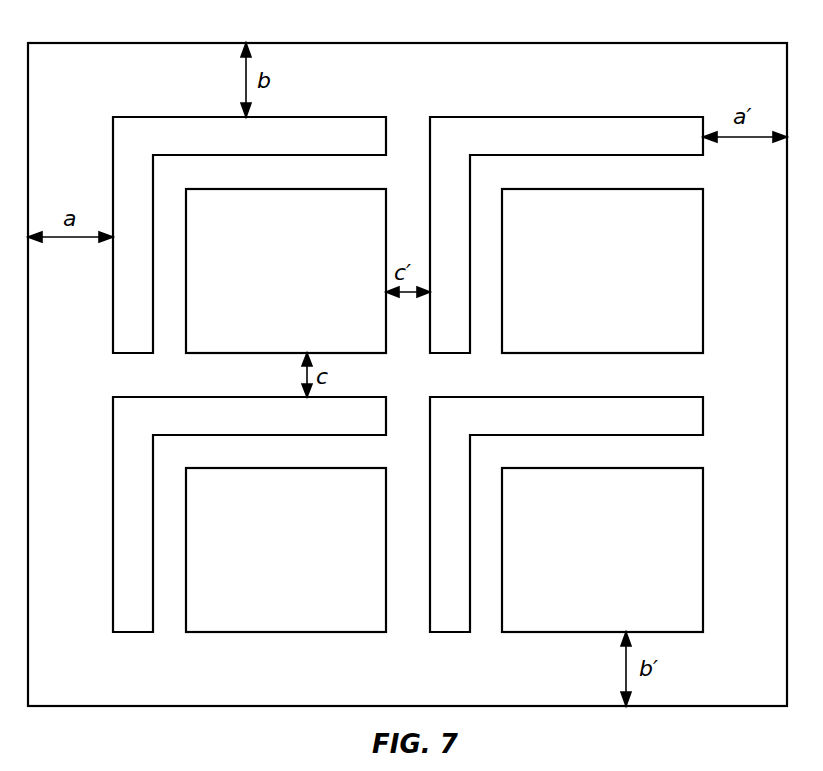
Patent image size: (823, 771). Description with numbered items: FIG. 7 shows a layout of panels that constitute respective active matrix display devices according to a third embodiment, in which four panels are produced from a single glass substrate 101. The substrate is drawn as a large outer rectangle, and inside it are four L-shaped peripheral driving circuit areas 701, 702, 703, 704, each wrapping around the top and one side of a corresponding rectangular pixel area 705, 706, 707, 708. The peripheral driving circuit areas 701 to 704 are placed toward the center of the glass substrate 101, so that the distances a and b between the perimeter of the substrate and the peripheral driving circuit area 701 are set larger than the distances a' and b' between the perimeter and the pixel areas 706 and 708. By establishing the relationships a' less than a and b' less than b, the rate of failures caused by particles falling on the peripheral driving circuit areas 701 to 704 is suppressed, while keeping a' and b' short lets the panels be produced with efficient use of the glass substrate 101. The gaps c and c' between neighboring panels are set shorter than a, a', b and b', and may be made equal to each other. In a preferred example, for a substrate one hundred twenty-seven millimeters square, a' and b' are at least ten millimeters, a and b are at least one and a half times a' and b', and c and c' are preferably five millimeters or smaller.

The glass substrate 101 is at (407, 354).
The peripheral driving circuit area 701 is at (249, 215).
The peripheral driving circuit area 702 is at (566, 215).
The peripheral driving circuit area 703 is at (225, 537).
The peripheral driving circuit area 704 is at (542, 537).
The pixel area 705 is at (303, 230).
The pixel area 706 is at (622, 229).
The pixel area 707 is at (303, 614).
The pixel area 708 is at (619, 614).